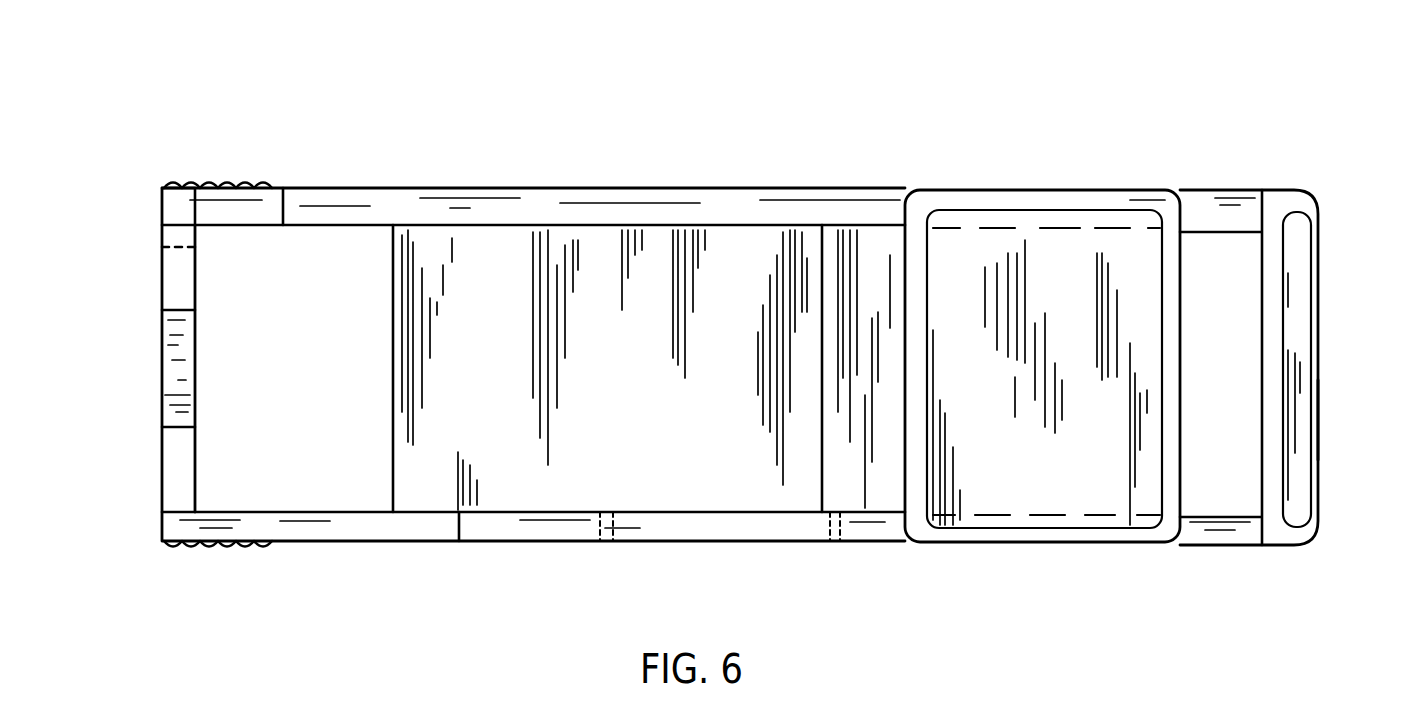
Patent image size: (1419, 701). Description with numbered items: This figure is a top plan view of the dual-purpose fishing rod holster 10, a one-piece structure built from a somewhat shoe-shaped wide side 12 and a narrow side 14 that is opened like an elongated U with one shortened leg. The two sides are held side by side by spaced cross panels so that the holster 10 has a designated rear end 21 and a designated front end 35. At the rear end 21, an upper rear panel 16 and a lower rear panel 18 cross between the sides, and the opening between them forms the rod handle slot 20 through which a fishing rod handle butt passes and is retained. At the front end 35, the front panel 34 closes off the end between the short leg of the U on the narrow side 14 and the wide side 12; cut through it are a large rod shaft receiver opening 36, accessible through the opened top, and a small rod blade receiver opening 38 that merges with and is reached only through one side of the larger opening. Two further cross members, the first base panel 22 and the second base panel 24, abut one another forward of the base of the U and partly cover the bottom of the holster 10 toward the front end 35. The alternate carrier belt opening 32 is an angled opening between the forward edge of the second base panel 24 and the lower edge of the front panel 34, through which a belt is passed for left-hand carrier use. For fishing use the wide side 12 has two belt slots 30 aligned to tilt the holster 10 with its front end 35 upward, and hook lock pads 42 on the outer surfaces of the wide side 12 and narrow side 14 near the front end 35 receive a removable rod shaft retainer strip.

The dual-purpose fishing rod holster 10 is at (606, 112).
The wide side 12 is at (537, 535).
The narrow side 14 is at (673, 188).
The upper rear panel 16 is at (1023, 453).
The lower rear panel 18 is at (1295, 241).
The rod handle slot 20 is at (1230, 325).
The rear end 21 is at (1342, 419).
The first base panel 22 is at (883, 497).
The second base panel 24 is at (717, 488).
The belt slots 30 is at (607, 543).
The alternate carrier belt opening 32 is at (350, 478).
The front panel 34 is at (162, 258).
The front end 35 is at (115, 186).
The rod shaft receiver opening 36 is at (197, 360).
The rod blade receiver opening 38 is at (185, 273).
The hook lock pads 42 is at (238, 180).